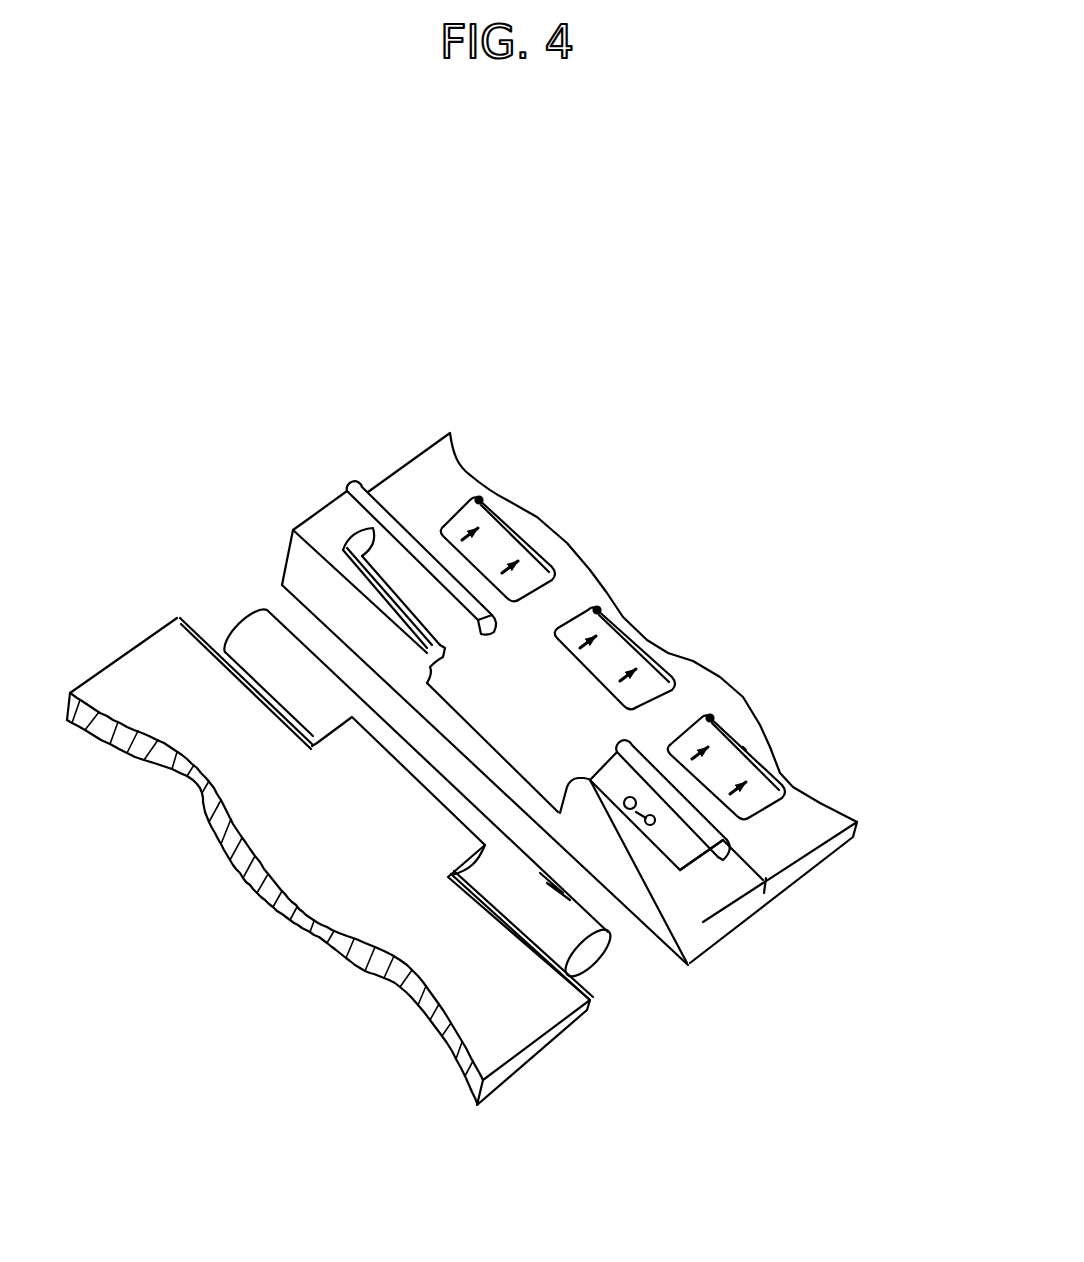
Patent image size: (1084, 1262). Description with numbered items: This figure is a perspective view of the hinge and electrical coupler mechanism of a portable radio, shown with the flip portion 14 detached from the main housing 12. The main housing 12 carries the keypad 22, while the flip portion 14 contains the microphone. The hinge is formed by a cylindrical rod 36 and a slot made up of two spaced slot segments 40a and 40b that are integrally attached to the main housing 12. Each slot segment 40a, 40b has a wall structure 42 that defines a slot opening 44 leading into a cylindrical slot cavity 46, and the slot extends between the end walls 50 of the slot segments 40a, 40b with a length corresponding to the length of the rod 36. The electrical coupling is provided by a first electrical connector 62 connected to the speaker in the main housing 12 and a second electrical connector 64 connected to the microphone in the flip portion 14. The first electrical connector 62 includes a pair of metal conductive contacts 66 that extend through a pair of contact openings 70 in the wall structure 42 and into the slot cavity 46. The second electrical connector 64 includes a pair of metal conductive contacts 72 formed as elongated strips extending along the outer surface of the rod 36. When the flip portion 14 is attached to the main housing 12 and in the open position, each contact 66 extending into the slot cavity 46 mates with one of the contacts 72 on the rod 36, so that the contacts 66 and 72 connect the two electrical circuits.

The main housing 12 is at (414, 456).
The flip portion 14 is at (237, 812).
The keypad 22 is at (743, 747).
The rod 36 is at (601, 968).
The slot segment 40a is at (345, 484).
The slot segment 40b is at (762, 878).
The wall structure 42 is at (425, 652).
The slot opening 44 is at (430, 554).
The slot cavity 46 is at (430, 681).
The end walls 50 is at (346, 538).
The first electrical connector 62 is at (688, 821).
The second electrical connector 64 is at (545, 907).
The metal conductive contacts 66 is at (636, 816).
The contact openings 70 is at (639, 797).
The metal conductive contacts 72 is at (540, 897).